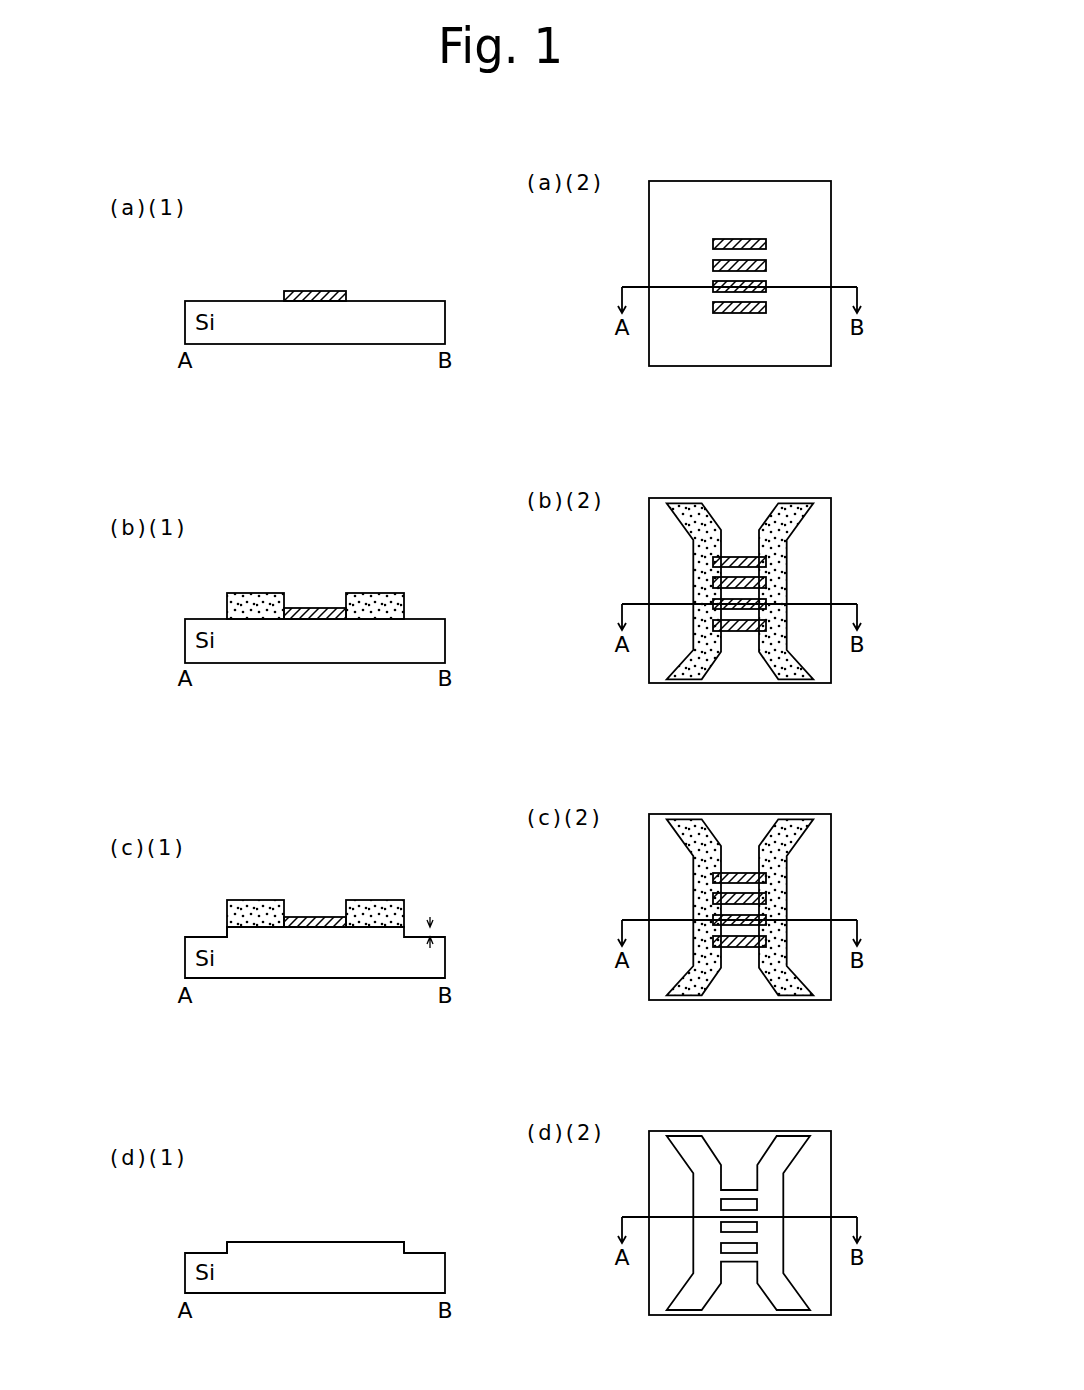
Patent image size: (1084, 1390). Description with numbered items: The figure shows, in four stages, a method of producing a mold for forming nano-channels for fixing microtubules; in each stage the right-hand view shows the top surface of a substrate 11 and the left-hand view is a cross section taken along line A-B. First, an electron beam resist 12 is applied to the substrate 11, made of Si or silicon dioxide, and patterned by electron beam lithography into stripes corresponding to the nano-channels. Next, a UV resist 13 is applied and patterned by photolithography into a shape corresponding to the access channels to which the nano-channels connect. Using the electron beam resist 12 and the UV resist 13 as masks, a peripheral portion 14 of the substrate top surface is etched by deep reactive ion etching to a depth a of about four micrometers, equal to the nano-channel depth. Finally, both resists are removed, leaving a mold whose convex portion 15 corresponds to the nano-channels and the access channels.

The substrate 11 is at (531, 748).
The electron beam resist 12 is at (540, 576).
The UV resist 13 is at (520, 724).
The peripheral portion 14 is at (520, 1098).
The convex portion 15 is at (559, 1220).
The depth a is at (434, 927).